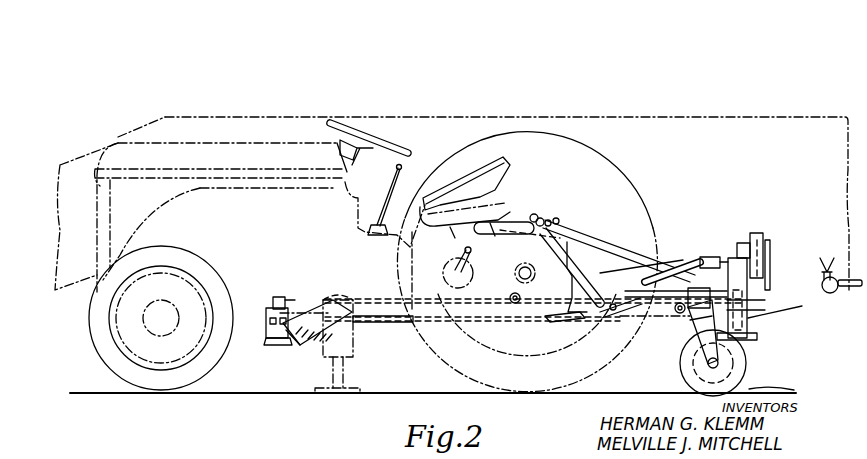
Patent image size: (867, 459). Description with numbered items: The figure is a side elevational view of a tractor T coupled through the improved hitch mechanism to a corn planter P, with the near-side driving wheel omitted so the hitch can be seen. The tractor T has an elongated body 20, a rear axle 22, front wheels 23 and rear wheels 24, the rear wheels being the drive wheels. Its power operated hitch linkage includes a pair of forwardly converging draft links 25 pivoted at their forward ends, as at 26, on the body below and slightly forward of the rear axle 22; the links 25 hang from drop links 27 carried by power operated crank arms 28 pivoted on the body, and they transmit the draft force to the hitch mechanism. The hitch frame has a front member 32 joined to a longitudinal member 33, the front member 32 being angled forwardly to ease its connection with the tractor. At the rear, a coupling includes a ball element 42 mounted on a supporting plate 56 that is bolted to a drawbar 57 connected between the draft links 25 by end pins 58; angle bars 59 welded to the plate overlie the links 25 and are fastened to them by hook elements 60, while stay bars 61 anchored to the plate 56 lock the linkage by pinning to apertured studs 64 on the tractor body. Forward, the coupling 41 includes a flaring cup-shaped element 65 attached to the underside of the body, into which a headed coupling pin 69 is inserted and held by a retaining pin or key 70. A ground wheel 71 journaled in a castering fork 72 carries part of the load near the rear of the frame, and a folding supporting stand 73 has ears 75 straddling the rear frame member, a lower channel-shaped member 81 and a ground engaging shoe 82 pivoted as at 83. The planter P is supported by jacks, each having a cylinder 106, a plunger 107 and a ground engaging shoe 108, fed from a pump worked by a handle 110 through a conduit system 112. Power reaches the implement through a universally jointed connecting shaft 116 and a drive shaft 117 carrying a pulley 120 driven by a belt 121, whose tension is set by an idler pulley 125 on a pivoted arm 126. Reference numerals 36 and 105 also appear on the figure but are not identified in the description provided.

The tractor T is at (117, 130).
The corn planter P is at (231, 76).
The elongated body 20 is at (389, 287).
The rear axle 22 is at (517, 268).
The front wheels 23 is at (198, 255).
The rear wheels 24 is at (457, 377).
The draft links 25 is at (612, 312).
The pivot 26 is at (513, 294).
The drop links 27 is at (557, 249).
The crank arms 28 is at (510, 220).
The front member 32 is at (305, 317).
The longitudinal member 33 is at (437, 345).
The mower assembly 36 is at (799, 278).
The coupling 41 is at (262, 348).
The ball element 42 is at (750, 300).
The supporting plate 56 is at (718, 258).
The drawbar 57 is at (641, 321).
The end pins 58 is at (662, 305).
The angle bars 59 is at (649, 274).
The hook elements 60 is at (603, 318).
The stay bars 61 is at (607, 268).
The apertured studs 64 is at (557, 227).
The cup-shaped element 65 is at (272, 342).
The coupling pin 69 is at (237, 322).
The retaining pin 70 is at (288, 317).
The ground wheel 71 is at (750, 375).
The castering fork 72 is at (708, 360).
The supporting stand 73 is at (773, 338).
The ears 75 is at (757, 324).
The lower channel-shaped member 81 is at (765, 338).
The ground engaging shoe 82 is at (766, 343).
The shoe pivot 83 is at (760, 333).
The link 105 is at (577, 317).
The cylinder 106 is at (353, 357).
The plunger 107 is at (333, 375).
The ground engaging shoe 108 is at (355, 388).
The handle 110 is at (847, 243).
The conduit system 112 is at (848, 280).
The connecting shaft 116 is at (683, 275).
The drive shaft 117 is at (727, 258).
The pulley 120 is at (768, 245).
The belt 121 is at (762, 238).
The idler pulley 125 is at (755, 231).
The arm 126 is at (753, 232).